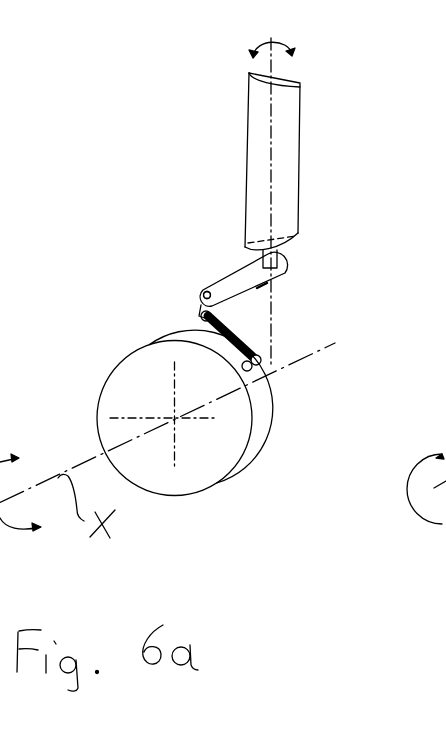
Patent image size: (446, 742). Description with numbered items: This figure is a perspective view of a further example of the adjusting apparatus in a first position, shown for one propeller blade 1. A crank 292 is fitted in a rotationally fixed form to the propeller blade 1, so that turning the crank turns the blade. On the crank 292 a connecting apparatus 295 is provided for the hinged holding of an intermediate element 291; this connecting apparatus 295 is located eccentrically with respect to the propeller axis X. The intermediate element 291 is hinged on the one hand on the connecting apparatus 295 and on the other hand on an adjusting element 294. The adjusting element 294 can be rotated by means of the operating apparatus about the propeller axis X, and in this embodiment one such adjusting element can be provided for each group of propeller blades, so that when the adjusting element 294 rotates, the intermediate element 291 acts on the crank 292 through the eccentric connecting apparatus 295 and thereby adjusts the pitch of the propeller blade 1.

The propeller blade 1 is at (293, 127).
The crank 292 is at (263, 286).
The intermediate element 291 is at (242, 332).
The adjusting element 294 is at (262, 425).
The connecting apparatus 295 is at (203, 292).